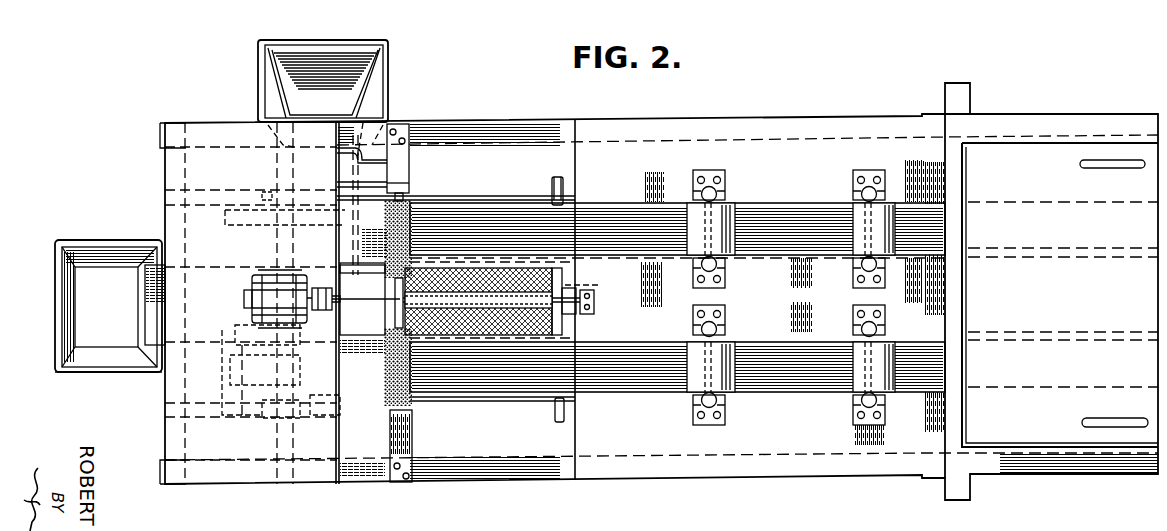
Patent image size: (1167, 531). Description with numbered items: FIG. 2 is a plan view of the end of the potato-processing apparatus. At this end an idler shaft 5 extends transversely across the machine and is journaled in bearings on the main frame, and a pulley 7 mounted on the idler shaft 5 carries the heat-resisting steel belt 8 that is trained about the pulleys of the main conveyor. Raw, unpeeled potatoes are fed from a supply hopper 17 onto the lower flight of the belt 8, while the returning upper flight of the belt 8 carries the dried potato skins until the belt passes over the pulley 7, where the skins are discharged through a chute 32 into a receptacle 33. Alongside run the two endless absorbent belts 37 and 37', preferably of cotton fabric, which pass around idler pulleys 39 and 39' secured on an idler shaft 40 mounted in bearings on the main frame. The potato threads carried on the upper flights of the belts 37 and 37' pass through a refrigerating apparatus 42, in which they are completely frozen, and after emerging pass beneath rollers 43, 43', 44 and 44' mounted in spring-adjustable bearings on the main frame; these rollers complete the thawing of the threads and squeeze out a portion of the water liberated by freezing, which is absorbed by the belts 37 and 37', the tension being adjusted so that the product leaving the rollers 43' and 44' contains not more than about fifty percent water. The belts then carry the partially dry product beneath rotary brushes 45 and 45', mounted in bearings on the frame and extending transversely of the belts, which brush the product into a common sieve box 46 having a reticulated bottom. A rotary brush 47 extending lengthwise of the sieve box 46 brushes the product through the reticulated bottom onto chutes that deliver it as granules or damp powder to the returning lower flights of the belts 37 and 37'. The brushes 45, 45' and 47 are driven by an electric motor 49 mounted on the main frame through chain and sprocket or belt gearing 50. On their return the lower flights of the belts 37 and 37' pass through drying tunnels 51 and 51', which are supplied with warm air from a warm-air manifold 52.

The idler shaft 5 is at (265, 386).
The pulley 7 is at (242, 322).
The belt 8 is at (774, 335).
The supply hopper 17 is at (377, 78).
The chute 32 is at (150, 312).
The receptacle 33 is at (115, 362).
The endless absorbent belt 37 is at (677, 379).
The endless absorbent belt 37' is at (677, 216).
The idler pulley 39 is at (229, 372).
The idler pulley 39' is at (283, 198).
The idler shaft 40 is at (310, 403).
The refrigerating apparatus 42 is at (1060, 308).
The roller 43 is at (727, 365).
The roller 43' is at (727, 229).
The roller 44 is at (852, 365).
The roller 44' is at (848, 229).
The rotary brush 45 is at (421, 380).
The rotary brush 45' is at (416, 201).
The sieve box 46 is at (510, 268).
The rotary brush 47 is at (570, 290).
The electric motor 49 is at (258, 292).
The gearing 50 is at (325, 311).
The drying tunnel 51 is at (492, 390).
The drying tunnel 51' is at (456, 194).
The warm-air manifold 52 is at (552, 180).